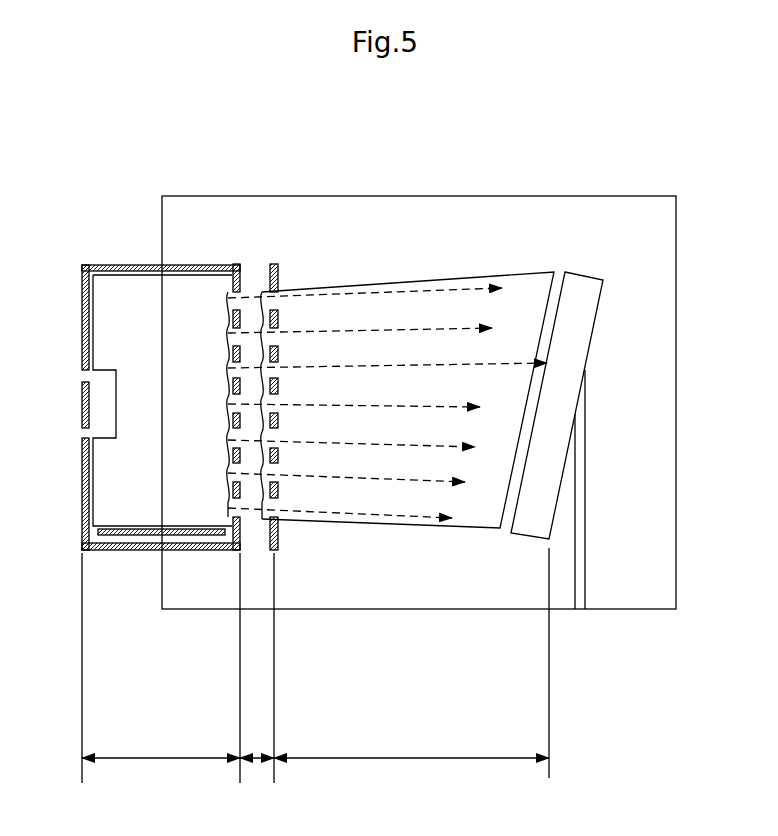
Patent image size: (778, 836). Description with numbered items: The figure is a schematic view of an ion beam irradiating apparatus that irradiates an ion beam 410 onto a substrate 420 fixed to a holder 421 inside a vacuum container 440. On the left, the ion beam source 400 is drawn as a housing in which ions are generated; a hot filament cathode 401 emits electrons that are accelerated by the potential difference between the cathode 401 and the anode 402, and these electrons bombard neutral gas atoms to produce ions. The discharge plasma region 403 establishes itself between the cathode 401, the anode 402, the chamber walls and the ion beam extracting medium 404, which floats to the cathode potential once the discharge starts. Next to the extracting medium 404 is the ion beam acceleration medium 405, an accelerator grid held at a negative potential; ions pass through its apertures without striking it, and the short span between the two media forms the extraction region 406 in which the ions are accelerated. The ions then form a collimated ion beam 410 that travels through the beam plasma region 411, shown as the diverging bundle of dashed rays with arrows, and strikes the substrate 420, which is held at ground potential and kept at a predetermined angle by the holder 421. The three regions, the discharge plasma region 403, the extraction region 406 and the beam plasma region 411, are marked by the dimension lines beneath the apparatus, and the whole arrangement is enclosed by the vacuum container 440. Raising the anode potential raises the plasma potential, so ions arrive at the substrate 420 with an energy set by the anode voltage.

The ion beam source 400 is at (98, 262).
The cathode 401 is at (82, 392).
The anode 402 is at (133, 532).
The discharge plasma region 403 is at (161, 676).
The ion beam extracting medium 404 is at (232, 318).
The ion beam acceleration medium 405 is at (279, 268).
The extraction region 406 is at (257, 688).
The ion beam 410 is at (378, 300).
The beam plasma region 411 is at (411, 671).
The substrate 420 is at (583, 285).
The holder 421 is at (583, 558).
The vacuum container 440 is at (400, 609).